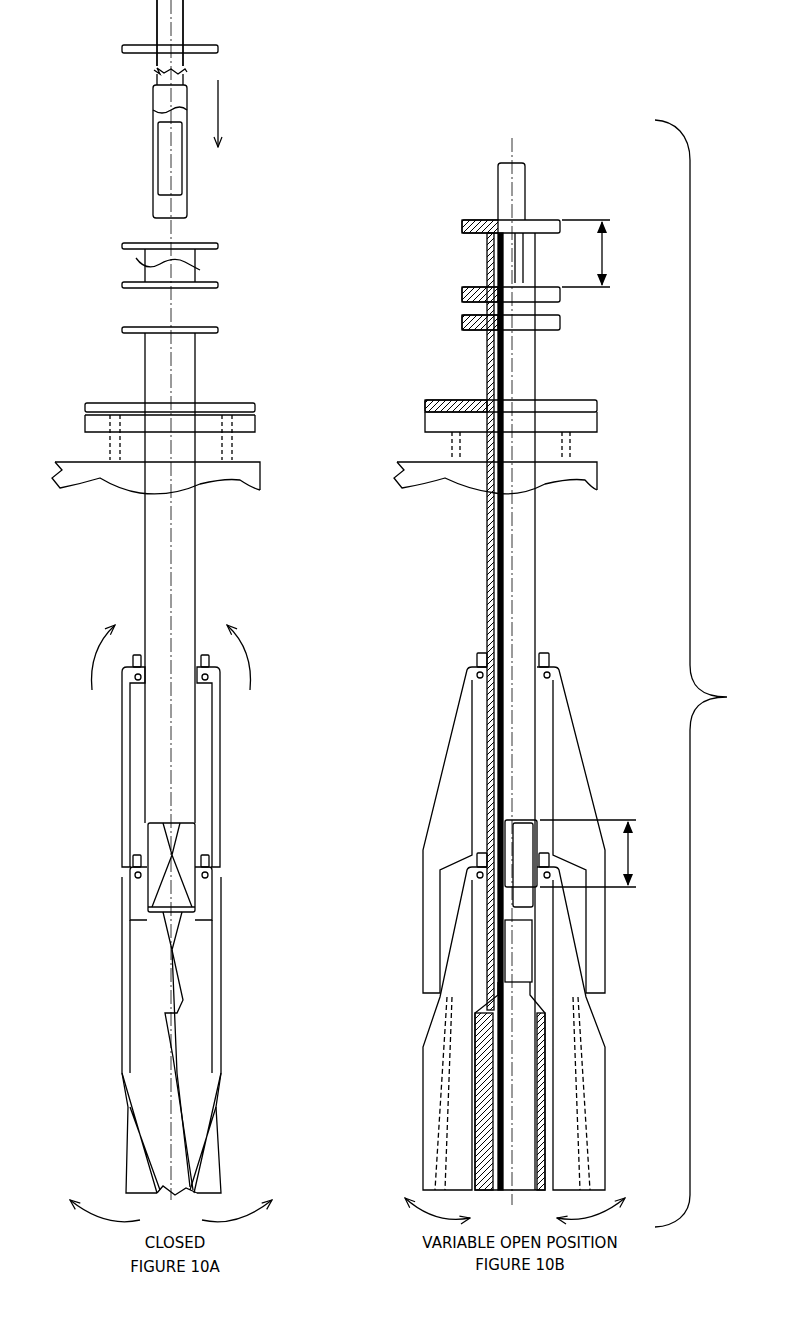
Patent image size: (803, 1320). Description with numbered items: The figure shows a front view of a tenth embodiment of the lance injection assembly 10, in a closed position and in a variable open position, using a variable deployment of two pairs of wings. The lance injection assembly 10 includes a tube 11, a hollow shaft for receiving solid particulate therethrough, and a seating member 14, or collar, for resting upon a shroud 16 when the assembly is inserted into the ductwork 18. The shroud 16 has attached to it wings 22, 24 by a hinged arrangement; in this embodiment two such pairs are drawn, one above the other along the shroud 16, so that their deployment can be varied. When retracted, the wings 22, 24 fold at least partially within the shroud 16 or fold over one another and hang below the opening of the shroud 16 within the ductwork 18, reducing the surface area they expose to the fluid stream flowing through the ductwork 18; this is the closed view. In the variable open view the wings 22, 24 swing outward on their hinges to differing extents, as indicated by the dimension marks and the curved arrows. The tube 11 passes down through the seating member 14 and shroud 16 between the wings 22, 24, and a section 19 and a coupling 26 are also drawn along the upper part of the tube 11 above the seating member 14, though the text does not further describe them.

In FIG. 10B, the lance injection assembly 10 is at (727, 697).
In FIG. 10A, the tube 11 is at (157, 20).
In FIG. 10A, the seating member 14 is at (218, 52).
In FIG. 10A, the shroud 16 is at (194, 367).
In FIG. 10B, the shroud 16 is at (487, 533).
In FIG. 10A, the ductwork 18 is at (256, 422).
In FIG. 10B, the ductwork 18 is at (495, 447).
In FIG. 10A, the coupling section 19 is at (187, 187).
In FIG. 10A, the wing 22 is at (122, 767).
In FIG. 10B, the wing 22 is at (443, 757).
In FIG. 10A, the wing 24 is at (222, 767).
In FIG. 10B, the wing 24 is at (576, 728).
In FIG. 10A, the spring coupling 26 is at (218, 282).